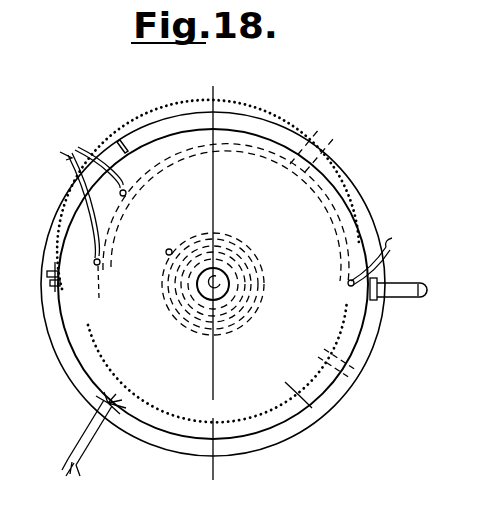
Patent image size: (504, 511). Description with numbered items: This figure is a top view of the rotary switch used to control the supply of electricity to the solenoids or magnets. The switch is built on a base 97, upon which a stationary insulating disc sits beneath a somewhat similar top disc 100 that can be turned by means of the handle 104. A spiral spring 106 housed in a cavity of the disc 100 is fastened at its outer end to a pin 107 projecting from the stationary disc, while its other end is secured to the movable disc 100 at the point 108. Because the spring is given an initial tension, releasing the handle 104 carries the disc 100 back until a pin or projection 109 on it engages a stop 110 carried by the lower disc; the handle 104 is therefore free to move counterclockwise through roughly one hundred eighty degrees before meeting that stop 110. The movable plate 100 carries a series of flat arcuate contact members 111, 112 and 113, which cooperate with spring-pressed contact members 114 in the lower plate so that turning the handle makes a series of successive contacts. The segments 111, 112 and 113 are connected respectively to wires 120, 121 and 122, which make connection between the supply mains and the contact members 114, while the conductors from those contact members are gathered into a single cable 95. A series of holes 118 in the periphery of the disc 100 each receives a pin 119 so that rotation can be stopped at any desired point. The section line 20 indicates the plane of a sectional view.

The section line 20 is at (228, 93).
The cable 95 is at (87, 430).
The base 97 is at (357, 212).
The disc 100 is at (312, 408).
The handle 104 is at (422, 291).
The spiral spring 106 is at (256, 304).
The pin 107 is at (171, 249).
The spring attachment 108 is at (240, 266).
The pin or projection 109 is at (58, 288).
The stop 110 is at (47, 261).
The arcuate contact member 111 is at (144, 291).
The arcuate contact member 112 is at (104, 220).
The arcuate contact member 113 is at (292, 168).
The spring-pressed contact member 114 is at (346, 382).
The holes 118 is at (322, 140).
The pin 119 is at (123, 140).
The wire 120 is at (60, 163).
The wire 121 is at (97, 160).
The wire 122 is at (420, 266).